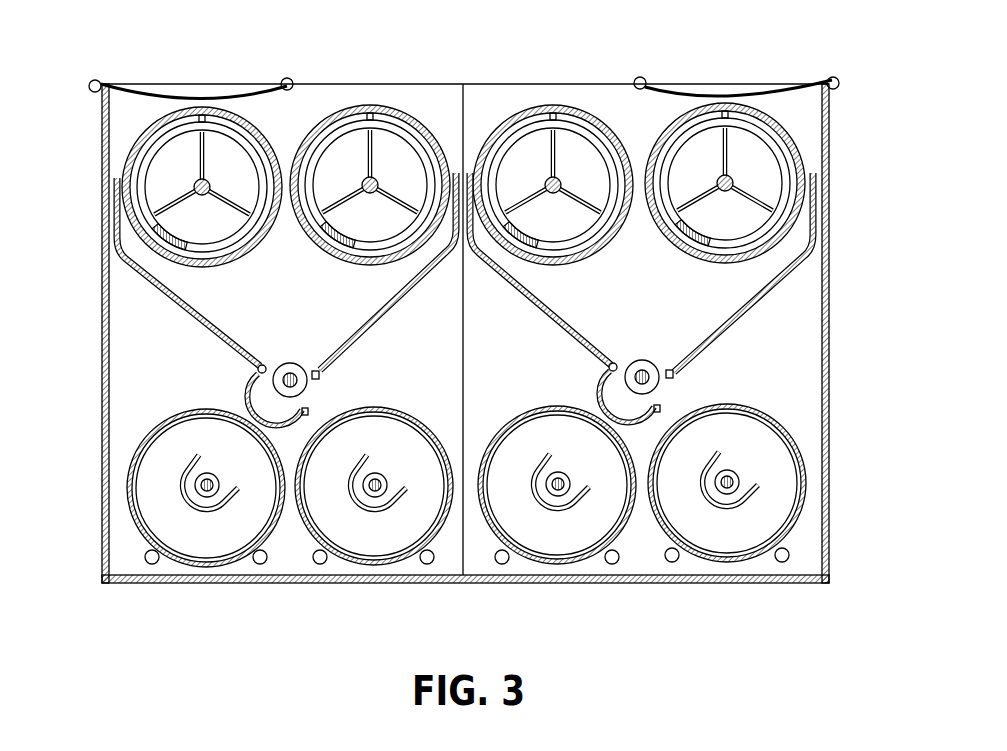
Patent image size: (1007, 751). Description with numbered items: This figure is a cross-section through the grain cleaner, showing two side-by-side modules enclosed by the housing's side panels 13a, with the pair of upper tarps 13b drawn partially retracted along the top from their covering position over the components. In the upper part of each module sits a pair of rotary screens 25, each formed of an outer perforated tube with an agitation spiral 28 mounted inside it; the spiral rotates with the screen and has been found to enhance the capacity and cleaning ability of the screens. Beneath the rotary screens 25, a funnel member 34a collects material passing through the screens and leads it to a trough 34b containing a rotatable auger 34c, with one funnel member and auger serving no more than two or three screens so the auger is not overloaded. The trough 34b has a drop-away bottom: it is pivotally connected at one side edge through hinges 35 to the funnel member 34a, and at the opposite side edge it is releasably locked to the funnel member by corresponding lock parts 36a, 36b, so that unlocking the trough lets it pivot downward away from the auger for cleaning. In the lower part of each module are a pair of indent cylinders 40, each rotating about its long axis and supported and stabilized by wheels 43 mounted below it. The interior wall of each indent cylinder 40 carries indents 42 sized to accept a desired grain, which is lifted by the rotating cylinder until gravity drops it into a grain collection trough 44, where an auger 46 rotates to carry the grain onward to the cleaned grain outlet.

The side panels 13a is at (827, 128).
The upper tarps 13b is at (223, 88).
The rotary screens 25 is at (513, 118).
The agitation spiral 28 is at (318, 118).
The funnel member 34a is at (775, 292).
The trough 34b is at (256, 378).
The rotatable auger 34c is at (281, 389).
The hinges 35 is at (285, 364).
The lock part 36a is at (675, 374).
The lock part 36b is at (660, 408).
The indent cylinders 40 is at (270, 542).
The indents 42 is at (779, 428).
The wheels 43 is at (260, 566).
The grain collection trough 44 is at (753, 507).
The auger 46 is at (747, 470).